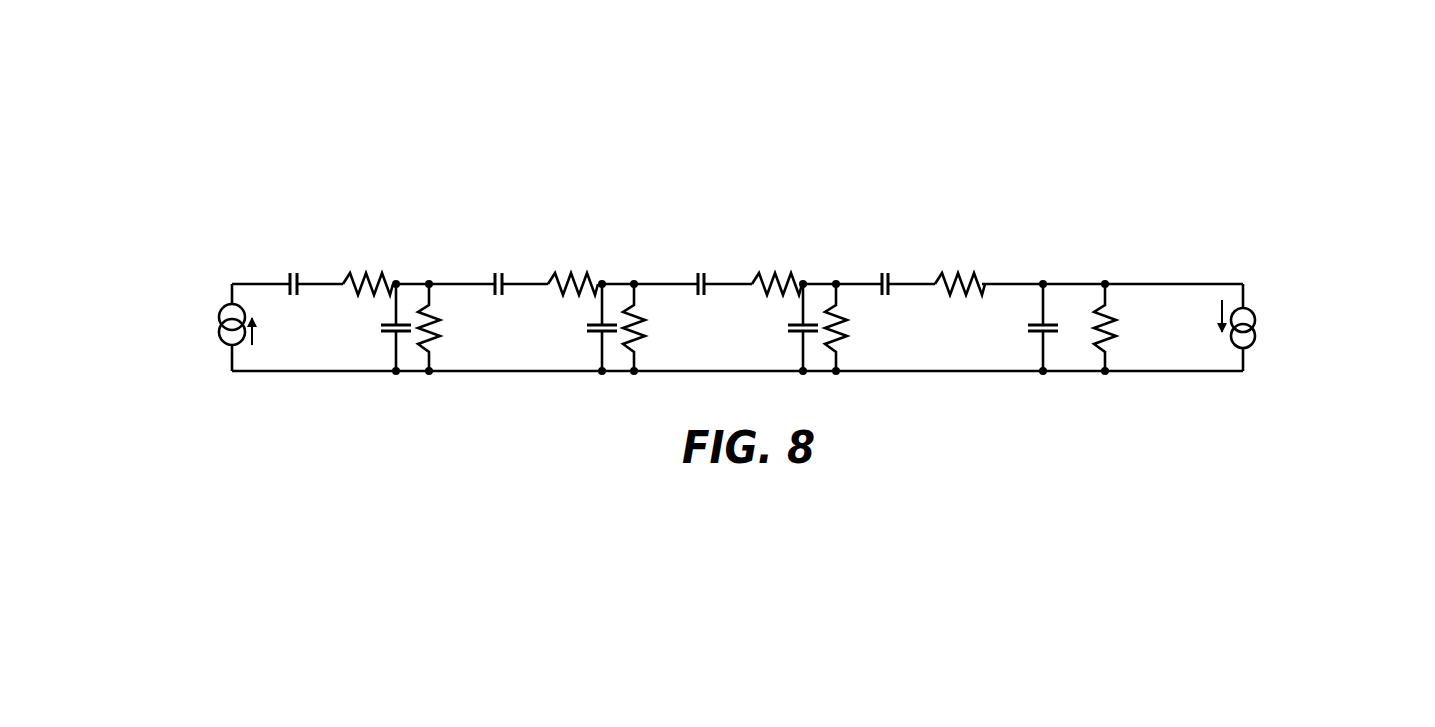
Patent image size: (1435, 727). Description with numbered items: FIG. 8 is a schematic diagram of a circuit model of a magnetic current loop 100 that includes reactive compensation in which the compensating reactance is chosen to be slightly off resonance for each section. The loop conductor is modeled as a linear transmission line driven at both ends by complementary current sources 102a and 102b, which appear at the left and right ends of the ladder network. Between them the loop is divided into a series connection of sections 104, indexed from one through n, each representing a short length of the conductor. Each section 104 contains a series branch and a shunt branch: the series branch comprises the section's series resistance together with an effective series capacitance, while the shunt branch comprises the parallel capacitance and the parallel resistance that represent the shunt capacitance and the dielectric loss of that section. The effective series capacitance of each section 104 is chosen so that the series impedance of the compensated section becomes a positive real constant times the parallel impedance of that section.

The magnetic current loop 100 is at (623, 145).
The complementary current source 102a is at (1257, 337).
The complementary current source 102b is at (217, 333).
The section 104 is at (908, 217).